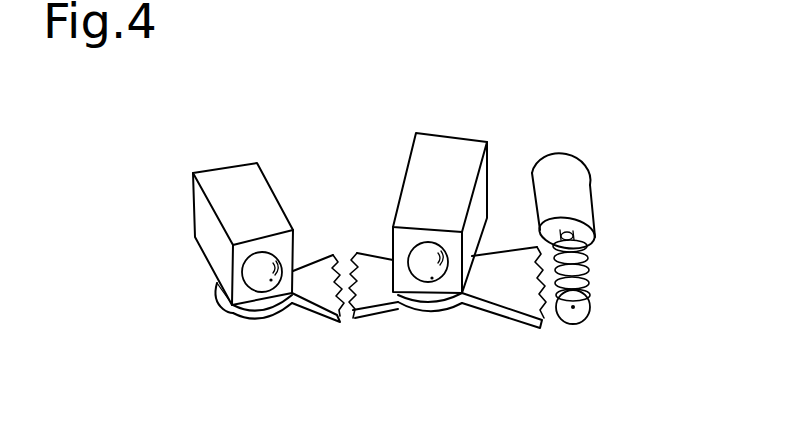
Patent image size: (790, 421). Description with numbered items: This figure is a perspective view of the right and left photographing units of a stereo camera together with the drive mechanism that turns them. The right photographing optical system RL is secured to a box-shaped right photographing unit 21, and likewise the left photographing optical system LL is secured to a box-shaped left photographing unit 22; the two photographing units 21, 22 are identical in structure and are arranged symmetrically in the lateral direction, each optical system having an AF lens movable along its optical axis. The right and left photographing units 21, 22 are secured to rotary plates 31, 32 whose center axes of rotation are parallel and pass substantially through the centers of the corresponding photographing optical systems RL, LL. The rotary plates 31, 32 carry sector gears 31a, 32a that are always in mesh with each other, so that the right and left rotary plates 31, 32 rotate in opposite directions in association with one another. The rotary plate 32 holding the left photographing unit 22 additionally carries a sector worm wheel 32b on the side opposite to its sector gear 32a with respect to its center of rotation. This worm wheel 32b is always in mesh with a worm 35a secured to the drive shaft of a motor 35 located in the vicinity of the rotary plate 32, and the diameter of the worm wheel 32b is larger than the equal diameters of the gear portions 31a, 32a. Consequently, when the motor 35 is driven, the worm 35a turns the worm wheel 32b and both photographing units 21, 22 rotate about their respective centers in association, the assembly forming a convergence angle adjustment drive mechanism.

The right photographing unit 21 is at (257, 163).
The left photographing unit 22 is at (485, 141).
The right photographing optical system RL is at (260, 276).
The left photographing optical system LL is at (419, 268).
The rotary plate 31 is at (258, 322).
The sector gear 31a is at (320, 320).
The rotary plate 32 is at (453, 310).
The sector gear 32a is at (378, 323).
The sector worm wheel 32b is at (533, 328).
The motor 35 is at (587, 187).
The worm 35a is at (590, 268).